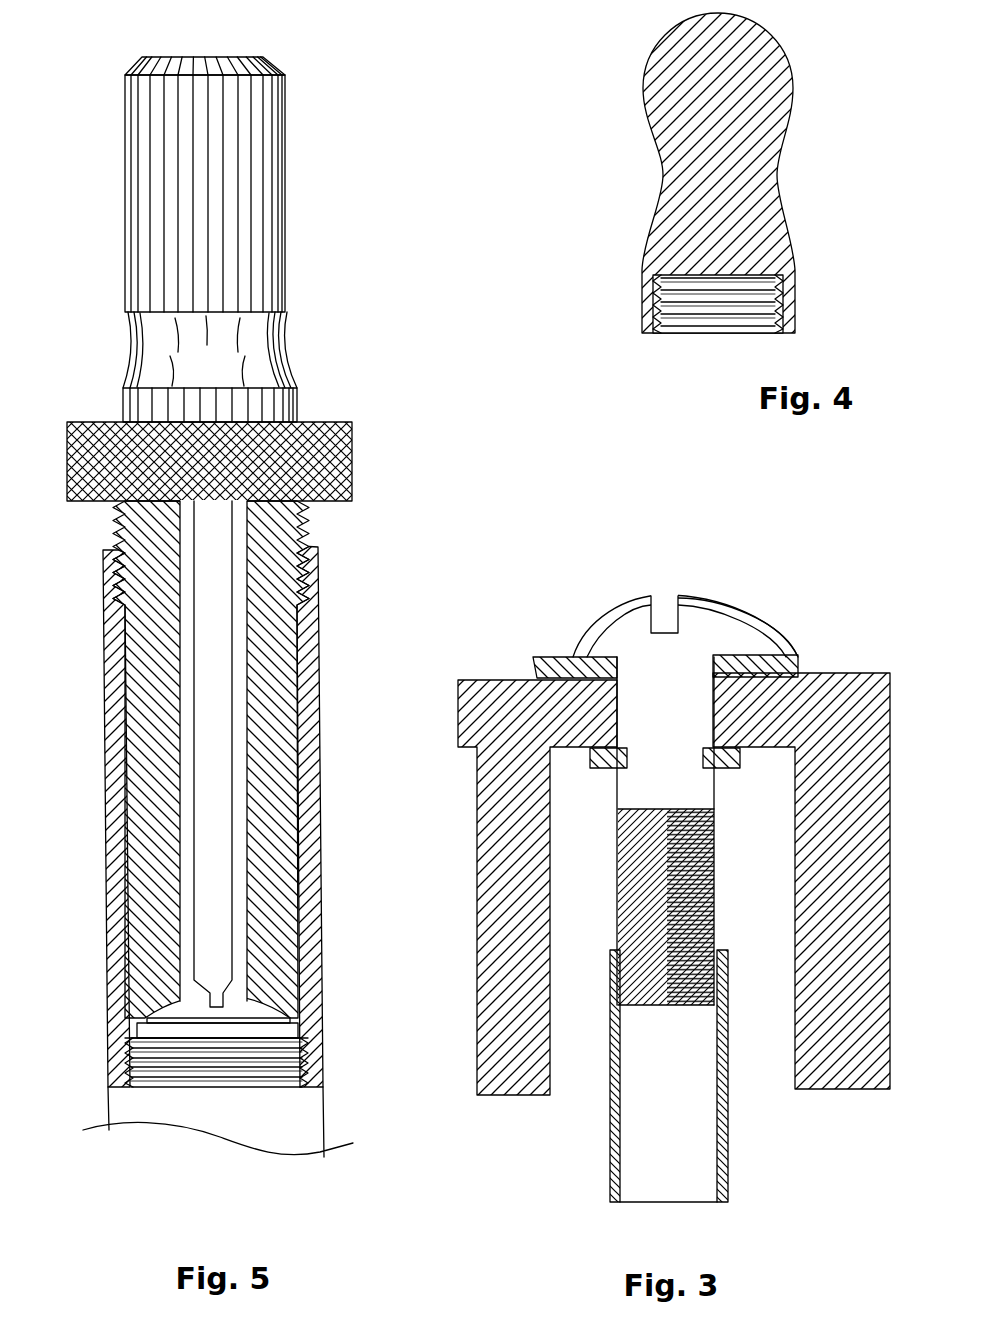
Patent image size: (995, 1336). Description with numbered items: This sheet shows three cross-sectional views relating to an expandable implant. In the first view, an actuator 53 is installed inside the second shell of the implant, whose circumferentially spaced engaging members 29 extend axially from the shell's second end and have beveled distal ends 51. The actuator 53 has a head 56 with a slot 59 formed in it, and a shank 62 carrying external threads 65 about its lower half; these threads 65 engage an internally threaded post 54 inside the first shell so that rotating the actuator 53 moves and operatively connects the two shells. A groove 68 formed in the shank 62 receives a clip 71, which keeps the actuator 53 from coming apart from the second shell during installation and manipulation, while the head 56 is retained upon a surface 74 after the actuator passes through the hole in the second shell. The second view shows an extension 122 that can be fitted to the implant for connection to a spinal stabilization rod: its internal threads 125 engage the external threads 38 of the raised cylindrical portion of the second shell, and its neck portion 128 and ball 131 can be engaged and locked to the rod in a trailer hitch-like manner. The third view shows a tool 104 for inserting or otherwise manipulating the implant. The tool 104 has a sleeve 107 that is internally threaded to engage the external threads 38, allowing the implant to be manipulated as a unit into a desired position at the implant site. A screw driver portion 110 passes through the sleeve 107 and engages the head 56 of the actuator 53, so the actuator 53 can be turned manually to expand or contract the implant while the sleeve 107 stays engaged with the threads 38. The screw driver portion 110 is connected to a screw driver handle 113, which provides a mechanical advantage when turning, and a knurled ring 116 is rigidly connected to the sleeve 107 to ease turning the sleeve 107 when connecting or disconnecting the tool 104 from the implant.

In FIG. 5, the screw driver handle 113 is at (263, 132).
In FIG. 5, the tool 104 is at (312, 292).
In FIG. 5, the knurled ring 116 is at (352, 460).
In FIG. 5, the sleeve 107 is at (320, 562).
In FIG. 5, the screw driver portion 110 is at (212, 684).
In FIG. 5, the external threads 38 is at (323, 1064).
In FIG. 5, the head 56 is at (218, 1025).
In FIG. 4, the extension 122 is at (643, 165).
In FIG. 4, the ball 131 is at (753, 30).
In FIG. 4, the neck portion 128 is at (777, 173).
In FIG. 4, the internal threads 125 is at (667, 317).
In FIG. 3, the engaging members 29 is at (490, 906).
In FIG. 3, the clip 71 is at (592, 762).
In FIG. 3, the distal ends 51 is at (490, 1076).
In FIG. 3, the groove 68 is at (707, 762).
In FIG. 3, the surface 74 is at (547, 657).
In FIG. 3, the actuator 53 is at (745, 608).
In FIG. 3, the slot 59 is at (665, 597).
In FIG. 3, the external threads 65 is at (715, 938).
In FIG. 3, the shank 62 is at (736, 847).
In FIG. 3, the internally threaded post 54 is at (730, 1169).